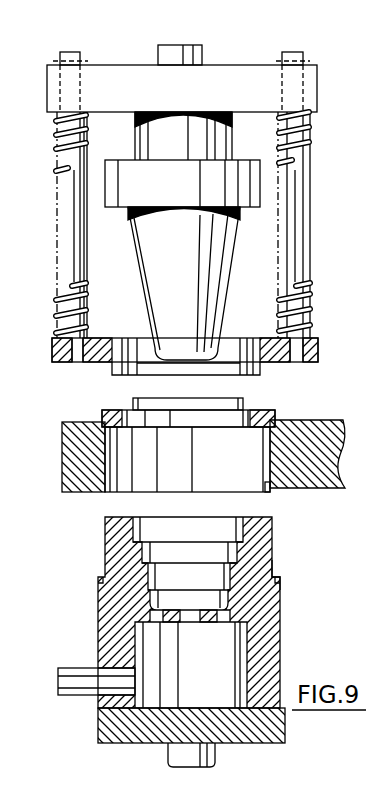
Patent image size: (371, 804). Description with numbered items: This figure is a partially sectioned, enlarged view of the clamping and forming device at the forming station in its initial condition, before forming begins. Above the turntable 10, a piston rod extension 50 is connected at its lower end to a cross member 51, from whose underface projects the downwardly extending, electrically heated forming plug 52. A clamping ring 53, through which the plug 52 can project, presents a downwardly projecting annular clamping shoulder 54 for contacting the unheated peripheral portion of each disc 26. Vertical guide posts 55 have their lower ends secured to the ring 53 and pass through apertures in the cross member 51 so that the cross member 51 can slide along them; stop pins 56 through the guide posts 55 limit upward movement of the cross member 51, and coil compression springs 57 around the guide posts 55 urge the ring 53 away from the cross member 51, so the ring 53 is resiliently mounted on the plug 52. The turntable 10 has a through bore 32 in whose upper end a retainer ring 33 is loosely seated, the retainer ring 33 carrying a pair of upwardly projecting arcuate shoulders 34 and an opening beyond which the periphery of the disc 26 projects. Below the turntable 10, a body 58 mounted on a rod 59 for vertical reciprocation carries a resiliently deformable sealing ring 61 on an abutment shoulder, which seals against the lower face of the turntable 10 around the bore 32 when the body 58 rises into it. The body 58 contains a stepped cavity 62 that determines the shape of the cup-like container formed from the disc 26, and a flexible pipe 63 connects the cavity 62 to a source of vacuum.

The turntable 10 is at (324, 423).
The disc 26 is at (120, 409).
The through bore 32 is at (270, 488).
The retainer ring 33 is at (103, 416).
The arcuate shoulders 34 is at (243, 399).
The piston rod extension 50 is at (202, 62).
The cross member 51 is at (317, 84).
The forming device or plug 52 is at (185, 273).
The ring 53 is at (318, 354).
The annular clamping shoulder 54 is at (102, 373).
The guide posts 55 is at (60, 196).
The stop pins 56 is at (82, 65).
The coil compression springs 57 is at (58, 124).
The body 58 is at (282, 640).
The rod 59 is at (216, 751).
The sealing ring 61 is at (280, 578).
The cavity 62 is at (218, 563).
The flexible pipe 63 is at (87, 667).